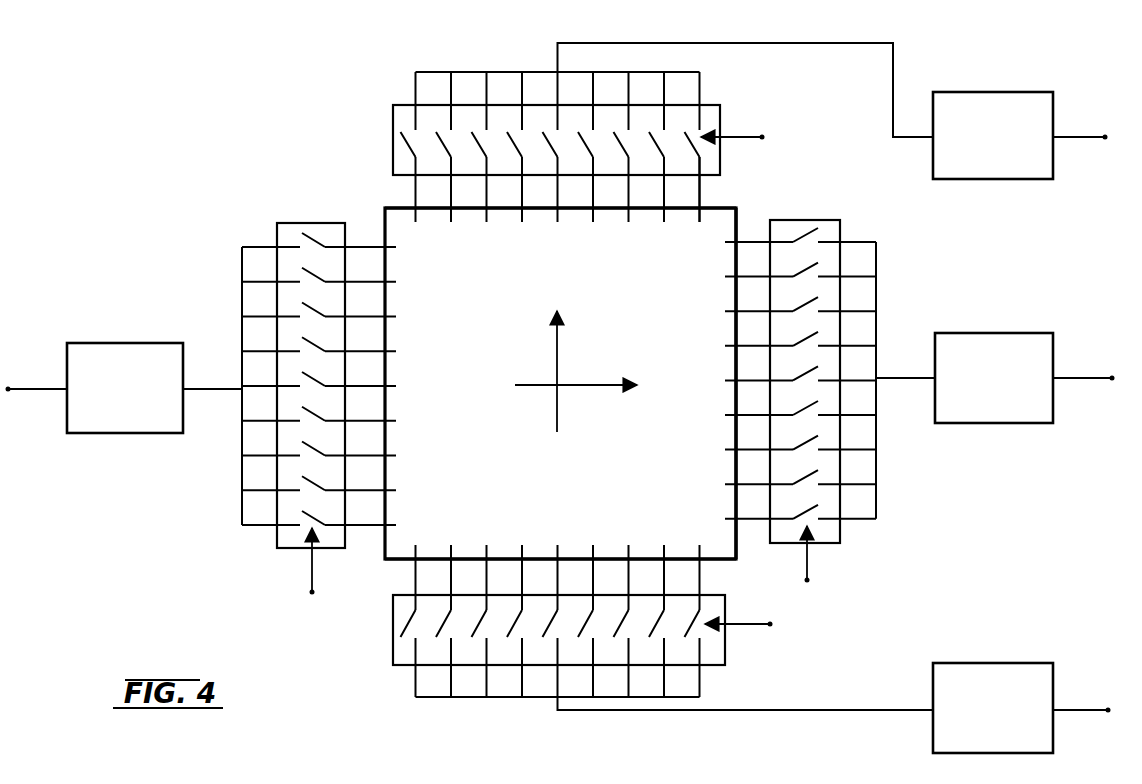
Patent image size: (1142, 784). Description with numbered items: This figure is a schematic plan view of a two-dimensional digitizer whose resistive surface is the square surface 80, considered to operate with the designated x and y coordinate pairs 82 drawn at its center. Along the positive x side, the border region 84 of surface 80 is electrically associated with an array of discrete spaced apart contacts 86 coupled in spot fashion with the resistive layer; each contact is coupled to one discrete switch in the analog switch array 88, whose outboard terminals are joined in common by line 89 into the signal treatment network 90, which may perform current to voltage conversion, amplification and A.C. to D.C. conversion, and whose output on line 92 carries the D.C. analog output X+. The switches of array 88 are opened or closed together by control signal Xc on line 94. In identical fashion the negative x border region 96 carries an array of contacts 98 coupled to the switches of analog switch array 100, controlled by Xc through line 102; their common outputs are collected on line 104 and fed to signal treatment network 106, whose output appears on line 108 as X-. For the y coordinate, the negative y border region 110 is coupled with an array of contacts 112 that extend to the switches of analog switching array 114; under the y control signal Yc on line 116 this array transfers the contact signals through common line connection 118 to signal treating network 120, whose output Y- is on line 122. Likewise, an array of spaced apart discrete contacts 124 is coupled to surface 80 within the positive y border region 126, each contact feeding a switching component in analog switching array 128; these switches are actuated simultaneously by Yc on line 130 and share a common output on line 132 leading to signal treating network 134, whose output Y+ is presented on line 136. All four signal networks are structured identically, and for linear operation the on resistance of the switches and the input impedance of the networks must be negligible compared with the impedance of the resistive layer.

The digitizer resistive surface 80 is at (580, 478).
The x and y coordinate pairs 82 is at (545, 401).
The border region 84 is at (744, 220).
The array of discrete spaced apart contacts 86 is at (713, 324).
The analog switch array 88 is at (840, 225).
The line 89 is at (893, 378).
The signal treatment network 90 is at (995, 333).
The line 92 is at (1072, 378).
The line 94 is at (810, 565).
The border region 96 is at (397, 205).
The array of discrete spaced apart contacts 98 is at (418, 361).
The analog switch array 100 is at (277, 228).
The line 102 is at (310, 569).
The line 104 is at (230, 389).
The signal treatment network 106 is at (127, 343).
The line 108 is at (45, 389).
The border region 110 is at (402, 564).
The array of discrete spaced apart contacts 112 is at (643, 544).
The analog switching array 114 is at (393, 640).
The line 116 is at (758, 626).
The common line connection 118 is at (715, 710).
The signal treating network 120 is at (998, 663).
The line 122 is at (1075, 710).
The array of spaced apart discrete contacts 124 is at (601, 228).
The border region 126 is at (717, 196).
The analog switching array 128 is at (393, 130).
The line 130 is at (743, 137).
The line 132 is at (605, 43).
The signal treating network 134 is at (1015, 92).
The line 136 is at (1073, 137).